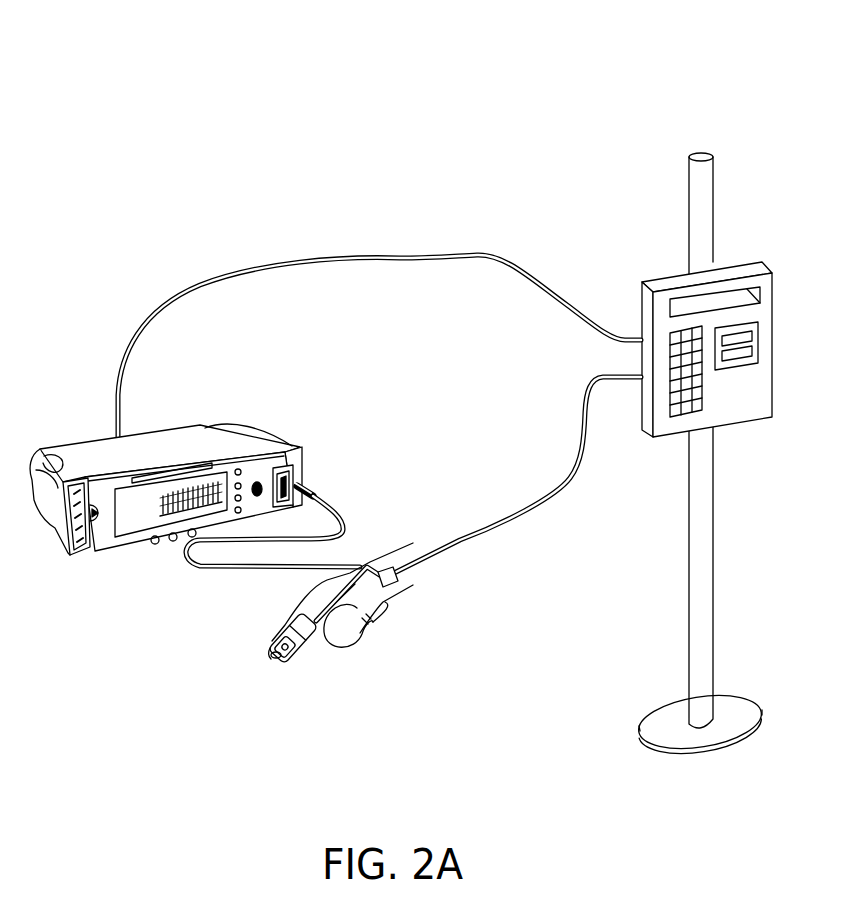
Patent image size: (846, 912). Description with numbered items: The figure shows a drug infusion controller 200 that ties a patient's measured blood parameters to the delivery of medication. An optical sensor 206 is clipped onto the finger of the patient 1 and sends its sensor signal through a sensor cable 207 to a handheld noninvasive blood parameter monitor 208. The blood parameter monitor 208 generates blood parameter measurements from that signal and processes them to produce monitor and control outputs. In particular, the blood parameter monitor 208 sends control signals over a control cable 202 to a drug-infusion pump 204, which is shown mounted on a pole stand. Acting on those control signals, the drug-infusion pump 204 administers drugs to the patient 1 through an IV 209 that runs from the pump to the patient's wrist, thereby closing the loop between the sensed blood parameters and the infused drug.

The drug infusion controller 200 is at (387, 74).
The control cable 202 is at (500, 257).
The drug-infusion pump 204 is at (756, 268).
The optical sensor 206 is at (272, 655).
The sensor cable 207 is at (340, 514).
The noninvasive blood parameter monitor 208 is at (84, 450).
The IV 209 is at (560, 487).
The patient 1 is at (393, 603).